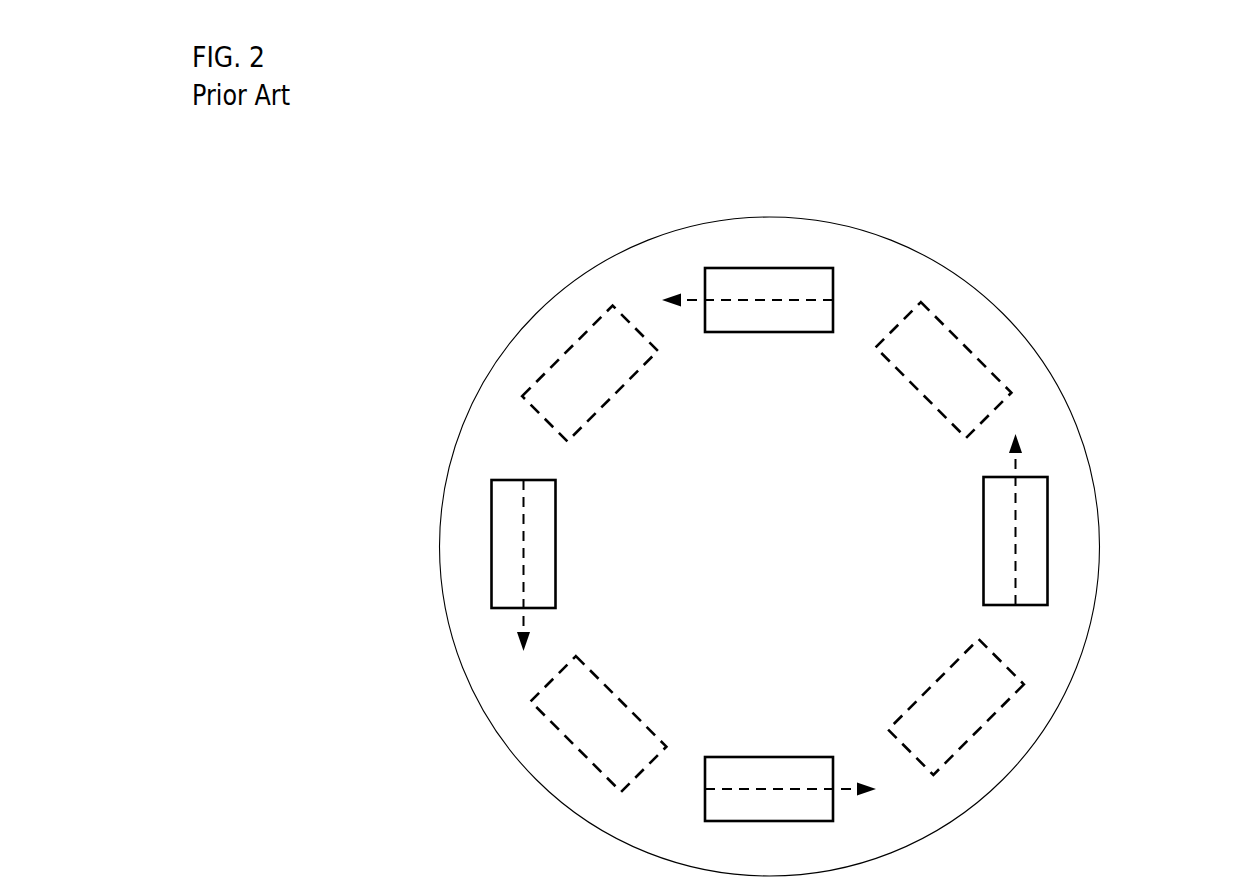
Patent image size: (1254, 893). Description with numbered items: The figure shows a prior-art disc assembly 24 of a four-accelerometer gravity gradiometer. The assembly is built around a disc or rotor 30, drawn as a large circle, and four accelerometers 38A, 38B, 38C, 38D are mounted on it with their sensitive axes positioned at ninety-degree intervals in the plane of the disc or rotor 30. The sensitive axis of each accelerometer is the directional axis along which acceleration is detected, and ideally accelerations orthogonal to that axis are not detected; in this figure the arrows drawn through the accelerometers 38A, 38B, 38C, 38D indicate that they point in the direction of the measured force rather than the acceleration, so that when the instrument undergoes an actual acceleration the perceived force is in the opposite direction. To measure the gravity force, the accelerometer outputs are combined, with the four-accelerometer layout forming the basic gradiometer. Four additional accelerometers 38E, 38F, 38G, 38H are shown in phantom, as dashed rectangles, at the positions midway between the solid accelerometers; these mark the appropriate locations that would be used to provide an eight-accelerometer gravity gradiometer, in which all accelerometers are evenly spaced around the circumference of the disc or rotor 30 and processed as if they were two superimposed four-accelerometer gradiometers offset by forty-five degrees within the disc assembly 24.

The disc assembly 24 is at (1118, 280).
The disc or rotor 30 is at (507, 350).
The accelerometer 38A is at (983, 568).
The accelerometer 38B is at (556, 578).
The accelerometer 38C is at (800, 332).
The accelerometer 38D is at (795, 757).
The additional accelerometer 38E is at (977, 733).
The additional accelerometer 38F is at (594, 415).
The additional accelerometer 38G is at (942, 417).
The additional accelerometer 38H is at (567, 737).